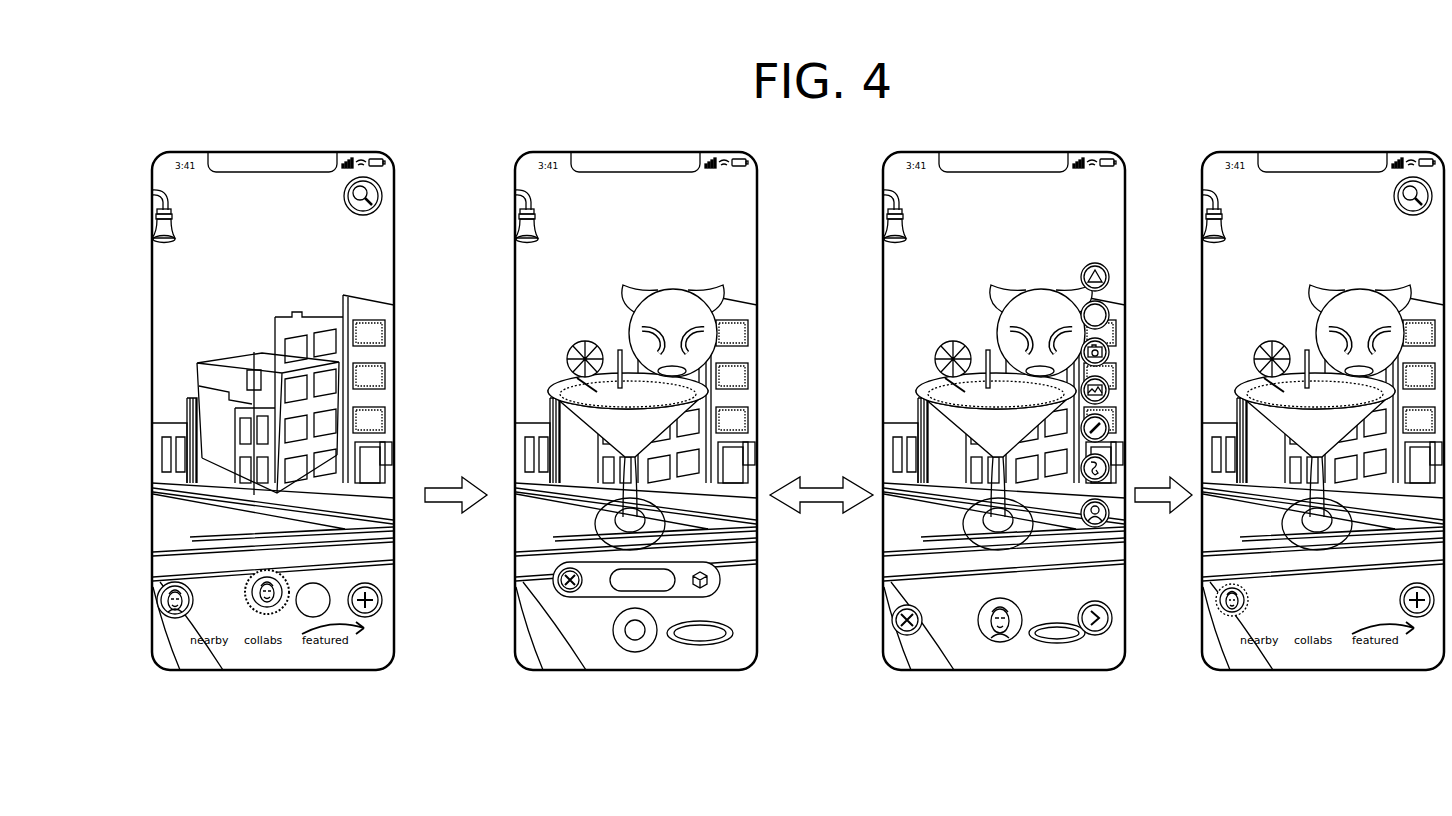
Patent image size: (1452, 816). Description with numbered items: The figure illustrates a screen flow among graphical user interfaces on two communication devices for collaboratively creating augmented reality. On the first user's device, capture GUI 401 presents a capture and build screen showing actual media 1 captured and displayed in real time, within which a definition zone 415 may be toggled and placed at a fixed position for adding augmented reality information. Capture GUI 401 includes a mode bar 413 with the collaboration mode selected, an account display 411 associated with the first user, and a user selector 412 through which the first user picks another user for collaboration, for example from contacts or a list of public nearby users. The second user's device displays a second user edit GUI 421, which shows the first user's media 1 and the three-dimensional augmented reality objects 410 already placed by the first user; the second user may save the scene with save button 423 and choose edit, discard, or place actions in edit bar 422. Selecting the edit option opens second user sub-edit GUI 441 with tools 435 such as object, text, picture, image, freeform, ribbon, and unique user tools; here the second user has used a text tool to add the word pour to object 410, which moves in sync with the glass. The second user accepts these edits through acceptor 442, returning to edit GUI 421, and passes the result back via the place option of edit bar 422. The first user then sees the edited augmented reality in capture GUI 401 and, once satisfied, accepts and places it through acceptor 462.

The actual media 1 is at (358, 228).
The capture GUI 401 is at (150, 238).
The augmented reality objects 410 is at (655, 432).
The account display 411 is at (190, 614).
The user selector 412 is at (382, 600).
The mode bar 413 is at (270, 656).
The definition zone 415 is at (372, 424).
The second user edit GUI 421 is at (512, 237).
The edit bar 422 is at (652, 580).
The save button 423 is at (635, 634).
The tools 435 is at (1108, 272).
The second user sub-edit GUI 441 is at (880, 237).
The acceptor 442 is at (1100, 636).
The acceptor 462 is at (1417, 618).